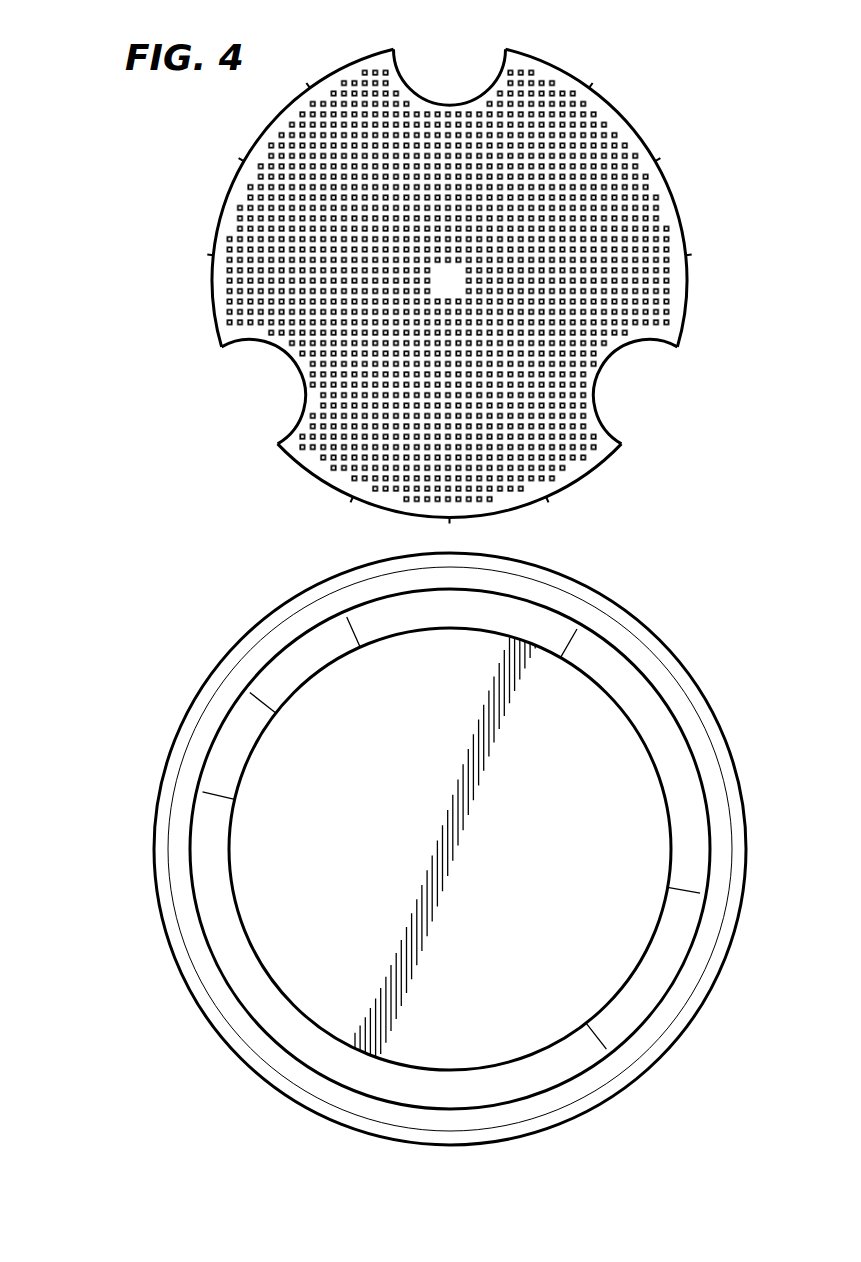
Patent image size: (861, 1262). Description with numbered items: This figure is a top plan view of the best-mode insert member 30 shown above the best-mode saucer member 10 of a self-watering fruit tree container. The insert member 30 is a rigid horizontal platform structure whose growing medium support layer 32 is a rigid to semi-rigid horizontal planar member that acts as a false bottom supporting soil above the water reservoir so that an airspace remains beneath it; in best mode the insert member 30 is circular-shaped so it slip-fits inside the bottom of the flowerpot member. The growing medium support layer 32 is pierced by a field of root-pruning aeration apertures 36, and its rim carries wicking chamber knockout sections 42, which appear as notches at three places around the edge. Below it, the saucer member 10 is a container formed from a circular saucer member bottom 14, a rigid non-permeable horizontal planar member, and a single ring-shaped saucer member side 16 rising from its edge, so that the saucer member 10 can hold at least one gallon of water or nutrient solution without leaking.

The saucer member 10 is at (420, 849).
The saucer member bottom 14 is at (584, 930).
The saucer member side 16 is at (643, 722).
The insert member 30 is at (425, 285).
The growing medium support layer 32 is at (623, 153).
The root-pruning aeration apertures 36 is at (660, 207).
The wicking chamber knockout section 42 is at (462, 72).